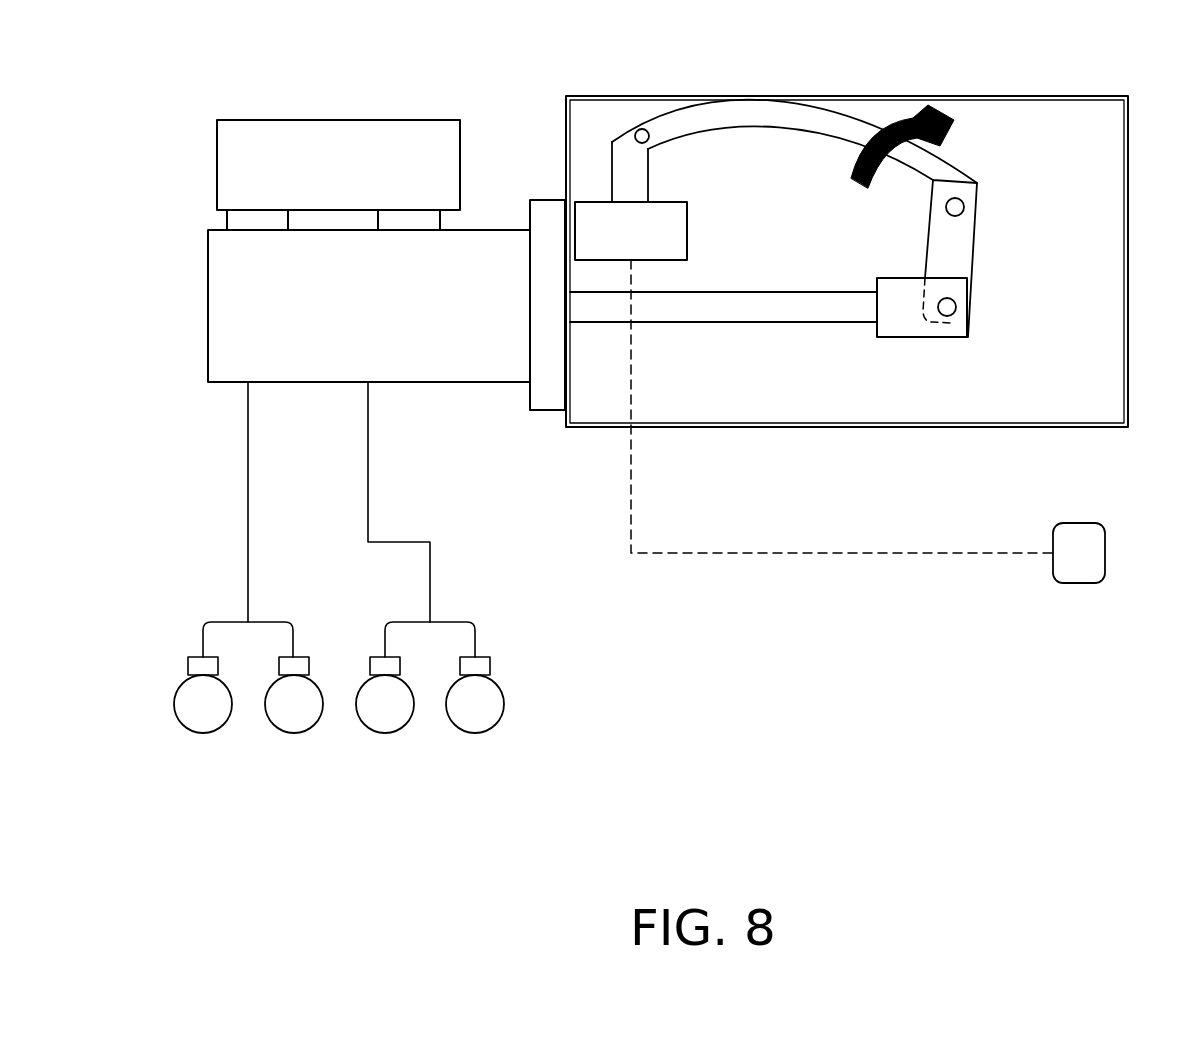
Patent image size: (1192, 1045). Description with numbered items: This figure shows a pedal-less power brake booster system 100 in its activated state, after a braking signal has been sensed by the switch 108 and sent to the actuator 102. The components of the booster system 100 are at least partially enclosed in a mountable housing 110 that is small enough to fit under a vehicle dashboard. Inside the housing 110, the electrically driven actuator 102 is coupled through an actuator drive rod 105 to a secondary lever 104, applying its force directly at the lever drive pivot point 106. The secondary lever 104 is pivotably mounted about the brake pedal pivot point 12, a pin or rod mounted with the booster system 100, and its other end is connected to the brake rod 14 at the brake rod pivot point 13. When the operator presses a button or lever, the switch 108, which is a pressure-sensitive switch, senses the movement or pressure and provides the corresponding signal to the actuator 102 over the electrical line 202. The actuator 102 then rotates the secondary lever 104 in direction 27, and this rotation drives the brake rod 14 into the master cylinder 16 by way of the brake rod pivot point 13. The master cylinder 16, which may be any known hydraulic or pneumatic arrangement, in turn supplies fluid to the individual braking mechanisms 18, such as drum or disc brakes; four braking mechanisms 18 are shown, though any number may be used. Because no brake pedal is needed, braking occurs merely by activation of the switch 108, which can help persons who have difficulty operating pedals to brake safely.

The brake pedal pivot point 12 is at (962, 206).
The brake rod pivot point 13 is at (945, 302).
The brake rod 14 is at (680, 312).
The master cylinder 16 is at (240, 305).
The braking mechanisms 18 is at (200, 655).
The direction 27 is at (947, 108).
The brake booster system 100 is at (1092, 143).
The actuator 102 is at (660, 232).
The secondary lever 104 is at (782, 120).
The actuator drive rod 105 is at (620, 175).
The lever drive pivot point 106 is at (642, 128).
The switch 108 is at (1075, 550).
The mountable housing 110 is at (1060, 96).
The line 202 is at (795, 553).